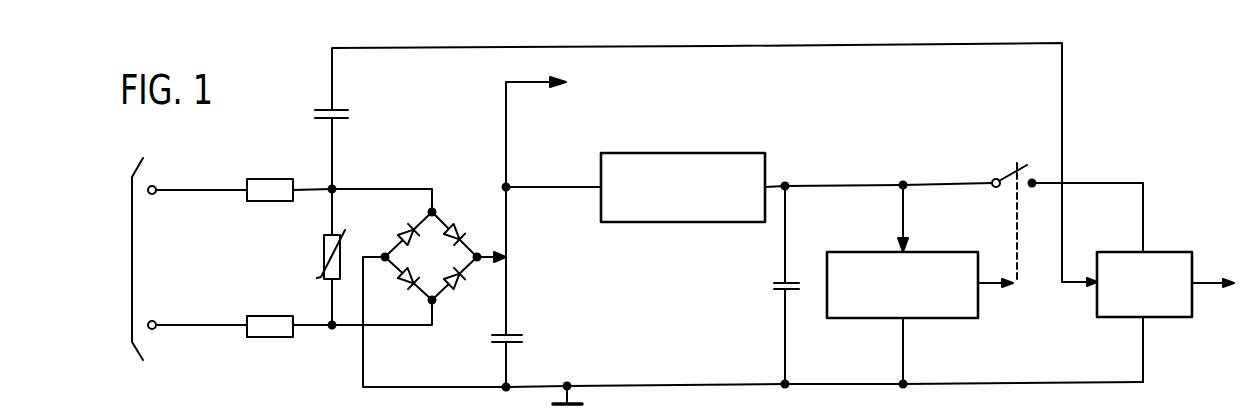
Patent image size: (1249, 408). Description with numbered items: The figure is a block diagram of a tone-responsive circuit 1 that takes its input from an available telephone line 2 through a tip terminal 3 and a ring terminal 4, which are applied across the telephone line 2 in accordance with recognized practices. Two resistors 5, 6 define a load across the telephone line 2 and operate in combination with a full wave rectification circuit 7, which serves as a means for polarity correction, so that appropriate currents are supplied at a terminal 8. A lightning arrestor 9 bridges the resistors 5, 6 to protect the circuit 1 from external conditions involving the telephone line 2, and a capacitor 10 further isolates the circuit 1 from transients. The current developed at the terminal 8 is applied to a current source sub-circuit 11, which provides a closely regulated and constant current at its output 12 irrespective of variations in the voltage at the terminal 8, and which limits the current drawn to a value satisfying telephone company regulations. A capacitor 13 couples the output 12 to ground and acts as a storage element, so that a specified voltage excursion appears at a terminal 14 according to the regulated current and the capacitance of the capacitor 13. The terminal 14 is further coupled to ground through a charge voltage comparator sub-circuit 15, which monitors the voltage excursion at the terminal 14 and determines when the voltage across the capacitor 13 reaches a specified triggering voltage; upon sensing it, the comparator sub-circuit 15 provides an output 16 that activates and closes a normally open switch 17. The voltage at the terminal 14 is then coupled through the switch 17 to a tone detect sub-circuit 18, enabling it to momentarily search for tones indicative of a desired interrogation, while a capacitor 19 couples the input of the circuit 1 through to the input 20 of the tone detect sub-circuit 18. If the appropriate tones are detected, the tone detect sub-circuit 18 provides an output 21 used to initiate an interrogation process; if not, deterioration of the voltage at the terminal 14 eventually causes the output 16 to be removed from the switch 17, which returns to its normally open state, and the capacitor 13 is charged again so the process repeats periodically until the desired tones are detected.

The tone-responsive circuit 1 is at (731, 42).
The telephone line 2 is at (131, 212).
The tip terminal 3 is at (156, 188).
The ring terminal 4 is at (156, 323).
The resistor 5 is at (262, 201).
The resistor 6 is at (268, 316).
The full wave rectification circuit 7 is at (439, 268).
The terminal 8 is at (487, 252).
The lightning arrestor 9 is at (345, 230).
The capacitor 10 is at (521, 337).
The current source sub-circuit 11 is at (711, 153).
The output of the current source sub-circuit 12 is at (772, 184).
The capacitor 13 is at (777, 292).
The terminal 14 is at (790, 182).
The charge voltage comparator sub-circuit 15 is at (950, 252).
The output of the charge voltage comparator sub-circuit 16 is at (990, 287).
The normally open switch 17 is at (1010, 176).
The tone detect sub-circuit 18 is at (1172, 250).
The capacitor 19 is at (341, 108).
The input of the tone detect sub-circuit 20 is at (1073, 280).
The output of the tone detect sub-circuit 21 is at (1207, 287).